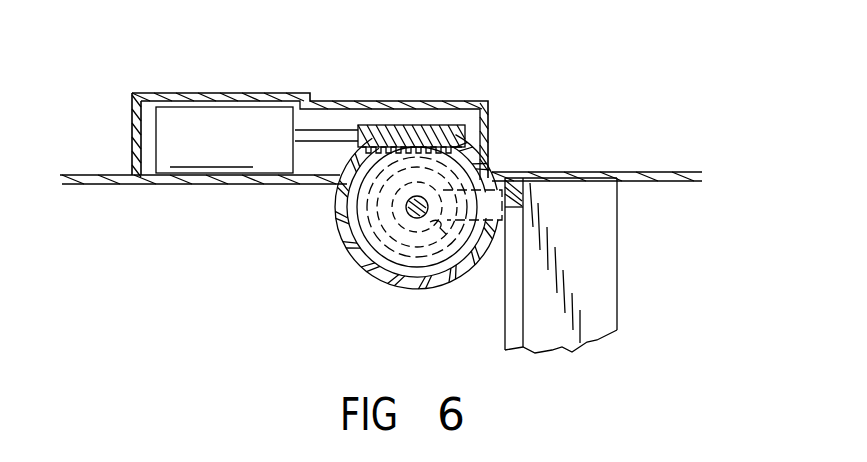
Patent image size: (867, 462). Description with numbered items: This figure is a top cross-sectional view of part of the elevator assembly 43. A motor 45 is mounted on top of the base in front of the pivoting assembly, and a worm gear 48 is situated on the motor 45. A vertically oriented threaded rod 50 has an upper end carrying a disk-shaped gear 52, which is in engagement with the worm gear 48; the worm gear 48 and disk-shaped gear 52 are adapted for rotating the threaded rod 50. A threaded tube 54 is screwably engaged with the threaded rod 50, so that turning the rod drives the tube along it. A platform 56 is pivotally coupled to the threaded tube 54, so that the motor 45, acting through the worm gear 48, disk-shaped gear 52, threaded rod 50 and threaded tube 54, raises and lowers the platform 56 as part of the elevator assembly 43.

The elevator assembly 43 is at (502, 140).
The motor 45 is at (226, 126).
The worm gear 48 is at (432, 124).
The threaded rod 50 is at (410, 210).
The disk-shaped gear 52 is at (332, 178).
The threaded tube 54 is at (440, 229).
The platform 56 is at (592, 283).